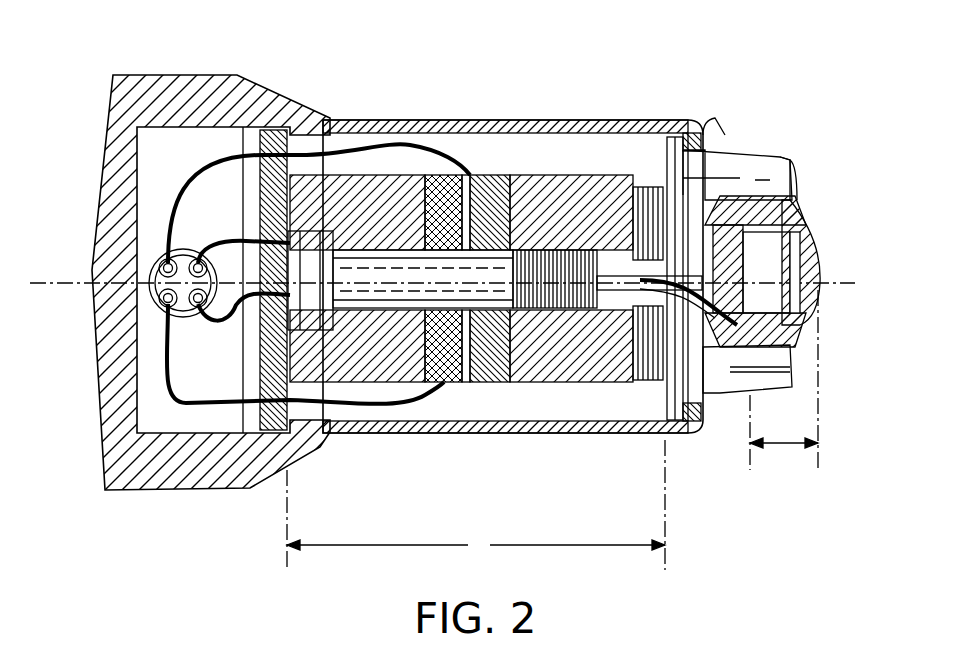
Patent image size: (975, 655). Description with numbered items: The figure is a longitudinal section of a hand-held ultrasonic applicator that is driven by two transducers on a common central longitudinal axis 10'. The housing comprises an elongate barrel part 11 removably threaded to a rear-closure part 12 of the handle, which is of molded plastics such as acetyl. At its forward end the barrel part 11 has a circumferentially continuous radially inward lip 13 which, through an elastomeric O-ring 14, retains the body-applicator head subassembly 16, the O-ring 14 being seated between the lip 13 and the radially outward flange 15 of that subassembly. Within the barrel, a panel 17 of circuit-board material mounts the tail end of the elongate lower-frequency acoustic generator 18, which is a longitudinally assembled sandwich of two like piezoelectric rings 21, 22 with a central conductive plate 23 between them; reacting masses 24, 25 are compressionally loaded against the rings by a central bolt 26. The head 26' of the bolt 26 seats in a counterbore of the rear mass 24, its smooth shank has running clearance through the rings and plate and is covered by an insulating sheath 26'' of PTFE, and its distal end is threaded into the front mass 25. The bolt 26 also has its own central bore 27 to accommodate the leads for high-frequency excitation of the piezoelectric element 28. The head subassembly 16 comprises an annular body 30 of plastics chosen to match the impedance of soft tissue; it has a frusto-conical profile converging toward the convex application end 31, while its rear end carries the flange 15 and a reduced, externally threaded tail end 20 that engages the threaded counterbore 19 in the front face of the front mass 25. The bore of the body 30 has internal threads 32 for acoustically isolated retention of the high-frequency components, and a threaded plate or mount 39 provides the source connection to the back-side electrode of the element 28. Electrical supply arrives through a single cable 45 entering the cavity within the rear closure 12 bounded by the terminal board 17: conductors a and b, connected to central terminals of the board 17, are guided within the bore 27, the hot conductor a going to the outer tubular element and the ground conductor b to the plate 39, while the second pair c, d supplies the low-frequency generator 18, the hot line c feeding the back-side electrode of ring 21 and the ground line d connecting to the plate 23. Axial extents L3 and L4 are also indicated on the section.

The rear-closure part 12 is at (170, 88).
The panel of circuit-board material 17 is at (265, 197).
The cable 45 is at (186, 312).
The central bore 27 is at (397, 215).
The ground conductor d is at (186, 178).
The hot conductor a is at (228, 240).
The ground conductor b is at (222, 335).
The hot conductor c is at (168, 380).
The elongate barrel part 11 is at (465, 128).
The rear reacting mass 24 is at (357, 212).
The bolt head 26' is at (357, 346).
The piezoelectric ring 22 is at (490, 383).
The central conductive plate 23 is at (466, 383).
The piezoelectric ring 21 is at (470, 385).
The insulating sheath 26'' is at (501, 199).
The central bolt 26 is at (509, 346).
The front reacting mass 25 is at (571, 212).
The lower-frequency acoustic generator 18 is at (546, 378).
The piezoelectric element 28 is at (808, 300).
The tail end 20 is at (633, 250).
The O-ring 14 is at (683, 148).
The radially outward flange 15 is at (670, 150).
The threaded counterbore 19 is at (632, 360).
The internal threads 32 is at (707, 120).
The radially inward lip 13 is at (715, 152).
The body-applicator head subassembly 16 is at (770, 152).
The annular body 30 is at (783, 166).
The application end 31 is at (795, 193).
The central longitudinal axis 10' is at (827, 262).
The threaded plate or mount 39 is at (720, 350).
The length dimension L3 is at (476, 505).
The length dimension L4 is at (784, 389).